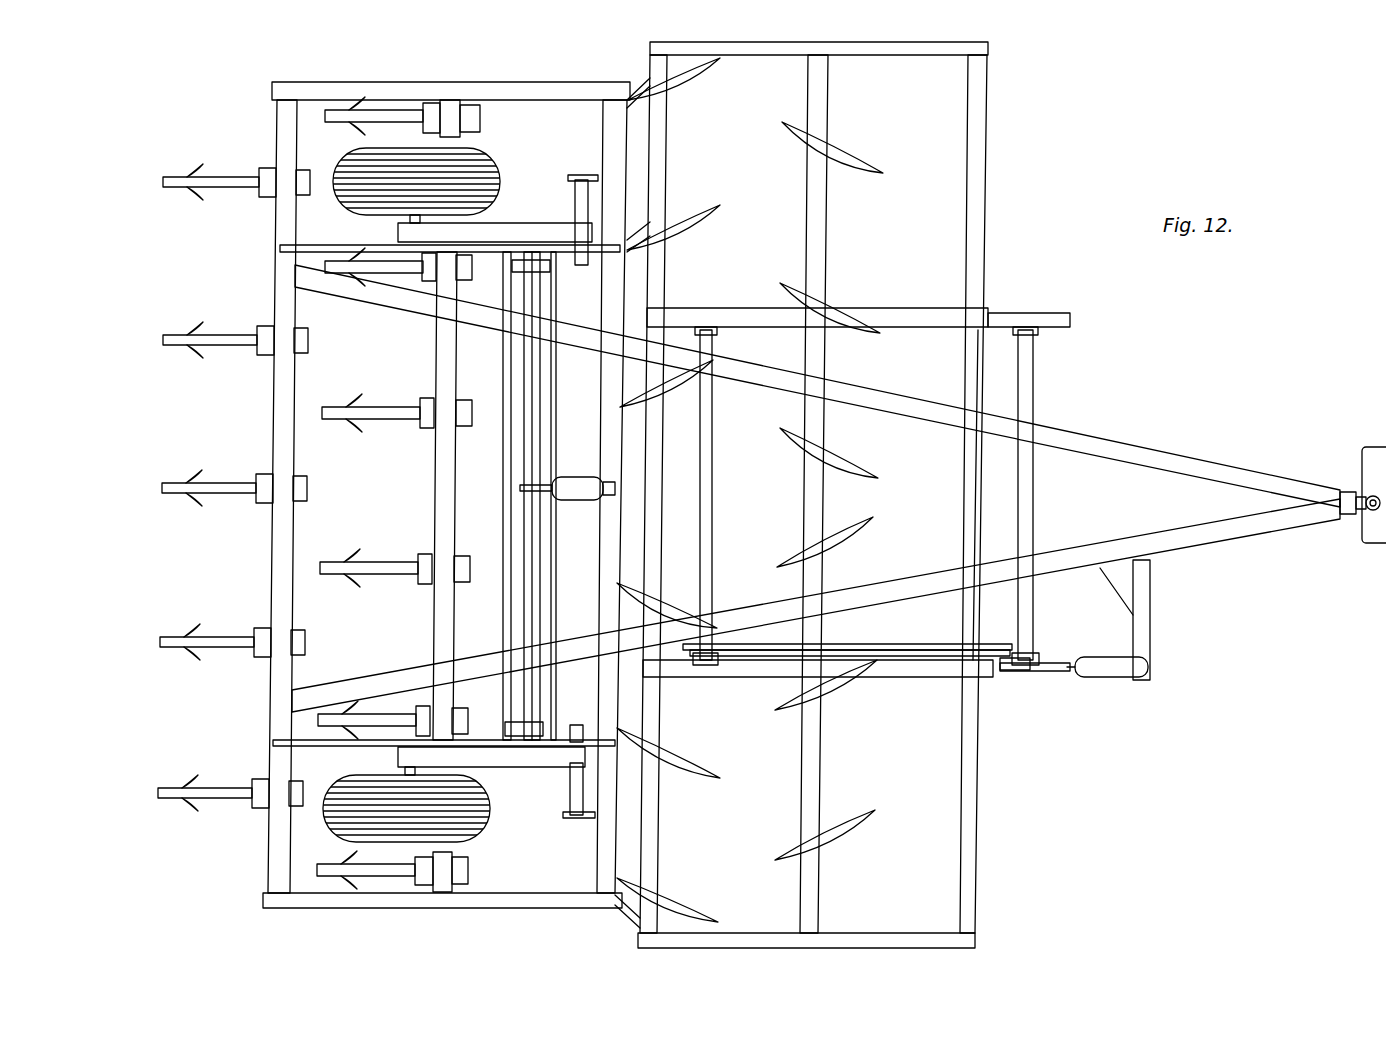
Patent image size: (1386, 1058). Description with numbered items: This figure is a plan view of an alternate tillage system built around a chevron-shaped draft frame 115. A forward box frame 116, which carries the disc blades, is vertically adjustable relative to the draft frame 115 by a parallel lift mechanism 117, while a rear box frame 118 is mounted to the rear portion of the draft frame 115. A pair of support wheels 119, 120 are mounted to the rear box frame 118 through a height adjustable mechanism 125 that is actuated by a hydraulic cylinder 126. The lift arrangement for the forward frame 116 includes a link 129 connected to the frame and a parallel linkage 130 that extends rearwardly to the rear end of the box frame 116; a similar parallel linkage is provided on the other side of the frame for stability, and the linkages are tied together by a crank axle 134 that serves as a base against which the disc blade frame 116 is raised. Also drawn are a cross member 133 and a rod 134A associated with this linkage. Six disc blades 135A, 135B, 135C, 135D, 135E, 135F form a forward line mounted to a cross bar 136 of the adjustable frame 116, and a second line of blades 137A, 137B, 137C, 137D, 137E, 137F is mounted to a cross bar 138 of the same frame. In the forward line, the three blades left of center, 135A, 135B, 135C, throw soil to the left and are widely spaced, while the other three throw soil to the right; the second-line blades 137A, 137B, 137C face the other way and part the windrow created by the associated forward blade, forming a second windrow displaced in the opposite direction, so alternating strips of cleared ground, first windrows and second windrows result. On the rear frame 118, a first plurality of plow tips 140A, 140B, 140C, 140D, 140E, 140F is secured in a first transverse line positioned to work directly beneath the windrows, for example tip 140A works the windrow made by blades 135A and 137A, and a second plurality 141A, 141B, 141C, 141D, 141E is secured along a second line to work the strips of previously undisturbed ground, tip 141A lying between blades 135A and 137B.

The draft frame 115 is at (1292, 466).
The forward box frame 116 is at (846, 495).
The parallel lift mechanism 117 is at (1084, 690).
The rear box frame 118 is at (530, 81).
The support wheel 119 is at (500, 176).
The support wheel 120 is at (497, 808).
The height adjustable mechanism 125 is at (542, 608).
The hydraulic cylinder 126 is at (576, 476).
The link 129 is at (1005, 680).
The parallel linkage 130 is at (950, 656).
The cross bar 133 is at (927, 304).
The crank axle 134 is at (1035, 389).
The vertical rod 134A is at (712, 497).
The disc blade 135A is at (880, 168).
The disc blade 135B is at (868, 333).
The disc blade 135C is at (878, 478).
The disc blade 135D is at (875, 520).
The disc blade 135E is at (830, 680).
The disc blade 135F is at (867, 812).
The cross bar 136 is at (828, 82).
The disc blade 137A is at (713, 64).
The disc blade 137B is at (700, 218).
The disc blade 137C is at (683, 373).
The disc blade 137D is at (688, 612).
The disc blade 137E is at (703, 772).
The disc blade 137F is at (678, 908).
The cross bar 138 is at (668, 150).
The plow tip 140A is at (385, 106).
The plow tip 140B is at (396, 276).
The plow tip 140C is at (396, 420).
The plow tip 140D is at (397, 576).
The plow tip 140E is at (383, 705).
The plow tip 140F is at (385, 887).
The plow tip 141A is at (229, 173).
The plow tip 141B is at (231, 324).
The plow tip 141C is at (230, 474).
The plow tip 141D is at (229, 628).
The plow tip 141E is at (230, 779).